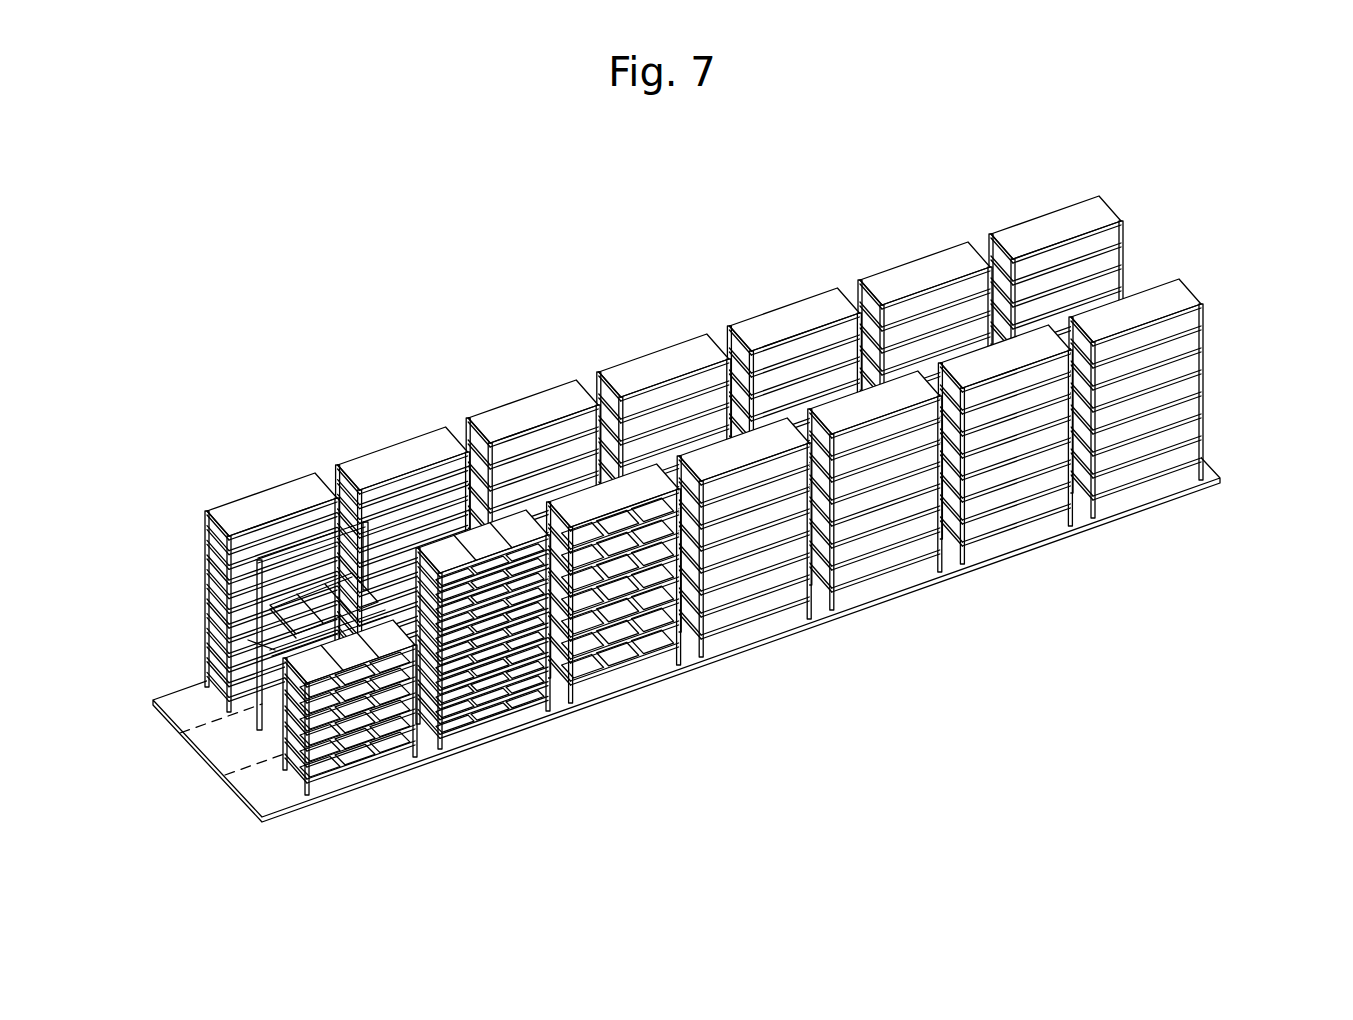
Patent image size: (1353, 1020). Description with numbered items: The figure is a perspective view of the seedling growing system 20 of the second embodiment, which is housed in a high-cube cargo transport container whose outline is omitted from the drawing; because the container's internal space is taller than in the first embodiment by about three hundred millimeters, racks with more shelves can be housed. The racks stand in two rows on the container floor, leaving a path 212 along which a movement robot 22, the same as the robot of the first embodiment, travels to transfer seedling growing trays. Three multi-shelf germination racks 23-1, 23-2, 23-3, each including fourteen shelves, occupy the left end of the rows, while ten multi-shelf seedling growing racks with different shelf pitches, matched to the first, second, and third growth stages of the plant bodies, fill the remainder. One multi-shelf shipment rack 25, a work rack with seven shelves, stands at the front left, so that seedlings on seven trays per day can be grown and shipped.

The seedling growing system 20 is at (704, 445).
The path 212 is at (222, 745).
The movement robot 22 is at (293, 607).
The multi-shelf germination rack 23-1 is at (268, 515).
The multi-shelf germination rack 23-2 is at (507, 630).
The multi-shelf germination rack 23-3 is at (401, 465).
The multi-shelf shipment rack 25 is at (403, 743).